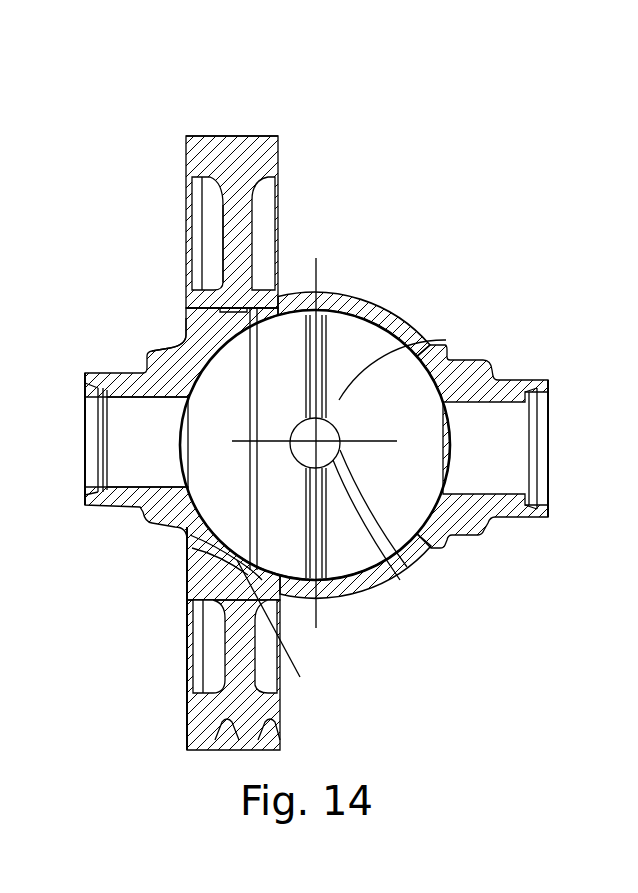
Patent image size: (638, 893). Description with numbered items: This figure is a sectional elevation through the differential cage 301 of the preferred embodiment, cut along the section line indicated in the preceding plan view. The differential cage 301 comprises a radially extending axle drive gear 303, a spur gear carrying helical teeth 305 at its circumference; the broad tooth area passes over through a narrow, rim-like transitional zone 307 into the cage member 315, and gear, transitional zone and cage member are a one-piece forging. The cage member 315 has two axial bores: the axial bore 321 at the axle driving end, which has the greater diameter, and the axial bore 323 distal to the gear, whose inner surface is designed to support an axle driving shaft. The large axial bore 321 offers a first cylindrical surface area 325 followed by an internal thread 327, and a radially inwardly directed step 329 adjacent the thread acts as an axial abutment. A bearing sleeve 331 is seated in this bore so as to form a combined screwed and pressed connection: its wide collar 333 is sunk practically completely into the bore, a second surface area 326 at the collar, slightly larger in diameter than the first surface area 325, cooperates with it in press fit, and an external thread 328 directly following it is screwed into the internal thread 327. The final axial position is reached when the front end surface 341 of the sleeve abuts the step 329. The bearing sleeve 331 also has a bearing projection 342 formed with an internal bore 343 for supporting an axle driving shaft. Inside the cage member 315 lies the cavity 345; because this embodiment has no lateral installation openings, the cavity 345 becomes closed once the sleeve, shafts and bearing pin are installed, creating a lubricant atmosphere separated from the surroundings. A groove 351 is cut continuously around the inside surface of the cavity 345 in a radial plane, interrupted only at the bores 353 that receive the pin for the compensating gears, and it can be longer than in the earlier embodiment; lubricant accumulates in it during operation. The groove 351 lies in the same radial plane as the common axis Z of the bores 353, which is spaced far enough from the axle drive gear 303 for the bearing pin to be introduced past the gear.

The differential cage 301 is at (352, 282).
The axle drive gear 303 is at (185, 230).
The helical teeth 305 is at (212, 136).
The transitional zone 307 is at (228, 238).
The step 329 is at (257, 293).
The cage member 315 is at (375, 312).
The bores for the bearing pin 353 is at (410, 338).
The axial bore 321 is at (185, 322).
The bearing sleeve 331 is at (150, 360).
The bearing projection 342 is at (112, 372).
The internal bore 343 is at (147, 397).
The axial bore 323 is at (495, 402).
The front end surface 341 is at (255, 313).
The cavity 345 is at (410, 491).
The collar 333 is at (195, 545).
The internal thread 327 is at (195, 555).
The first cylindrical surface area 325 is at (195, 568).
The second surface area 326 is at (190, 600).
The groove 351 is at (360, 593).
The external thread 328 is at (300, 677).
The common axis of the bores for the bearing pin Z is at (400, 568).